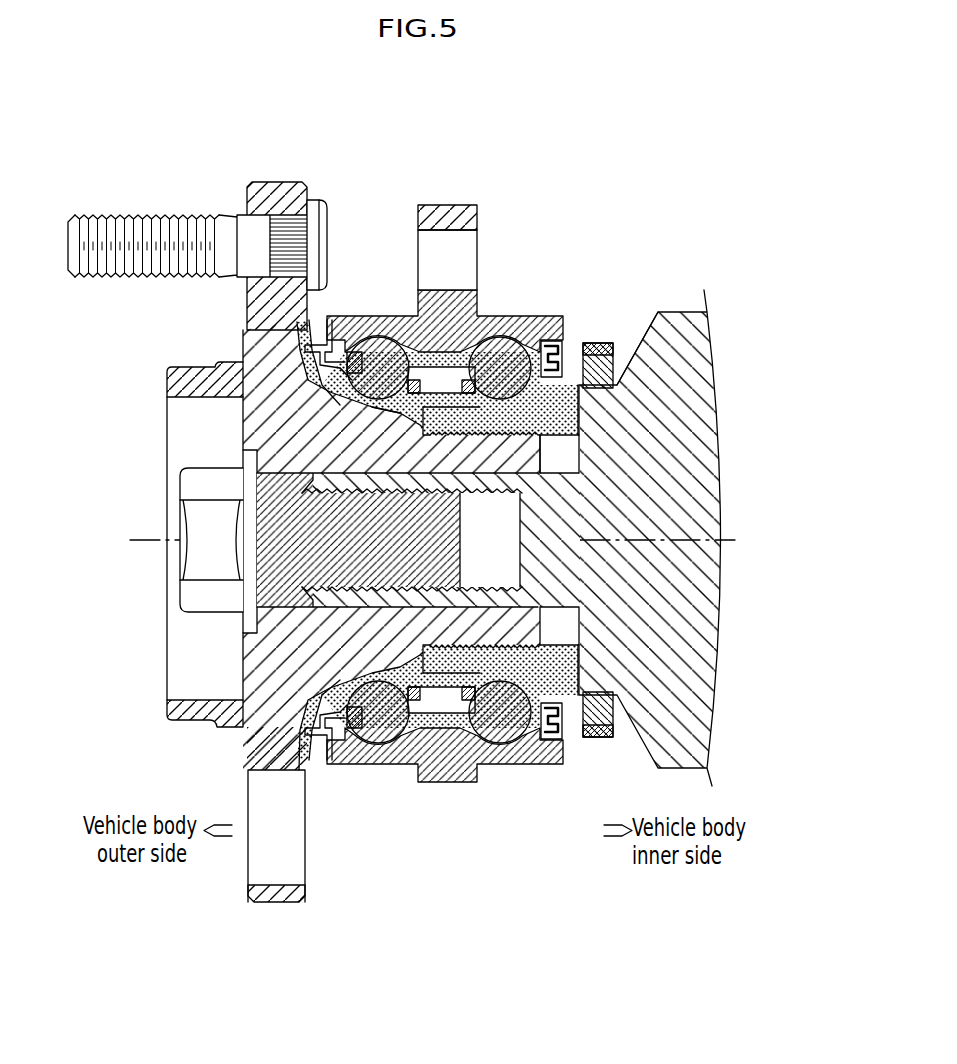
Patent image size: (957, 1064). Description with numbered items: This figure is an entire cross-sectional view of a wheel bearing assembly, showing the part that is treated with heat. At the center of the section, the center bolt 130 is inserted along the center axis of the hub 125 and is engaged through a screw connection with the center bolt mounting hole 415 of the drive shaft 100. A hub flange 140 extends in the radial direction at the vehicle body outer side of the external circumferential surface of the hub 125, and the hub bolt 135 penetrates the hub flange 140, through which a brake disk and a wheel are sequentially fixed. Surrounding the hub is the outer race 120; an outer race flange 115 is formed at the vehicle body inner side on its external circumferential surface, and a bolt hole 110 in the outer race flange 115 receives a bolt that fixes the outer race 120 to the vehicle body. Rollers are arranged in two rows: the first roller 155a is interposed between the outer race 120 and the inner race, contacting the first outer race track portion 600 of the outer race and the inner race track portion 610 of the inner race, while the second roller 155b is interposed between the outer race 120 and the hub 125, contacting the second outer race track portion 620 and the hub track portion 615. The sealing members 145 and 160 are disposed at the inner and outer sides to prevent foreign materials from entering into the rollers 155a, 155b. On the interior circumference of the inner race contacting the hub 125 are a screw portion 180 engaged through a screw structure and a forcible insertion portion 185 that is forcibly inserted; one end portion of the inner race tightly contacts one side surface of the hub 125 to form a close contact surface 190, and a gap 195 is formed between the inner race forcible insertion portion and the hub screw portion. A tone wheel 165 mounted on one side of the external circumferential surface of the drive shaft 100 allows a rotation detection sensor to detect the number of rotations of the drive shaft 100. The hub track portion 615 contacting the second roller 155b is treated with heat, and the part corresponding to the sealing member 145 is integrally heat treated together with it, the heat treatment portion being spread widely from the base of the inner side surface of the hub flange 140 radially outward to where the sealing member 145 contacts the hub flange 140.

The drive shaft 100 is at (647, 602).
The bolt hole 110 is at (463, 247).
The outer race flange 115 is at (442, 212).
The outer race 120 is at (463, 335).
The hub 125 is at (316, 427).
The center bolt 130 is at (388, 574).
The hub bolt 135 is at (255, 245).
The hub flange 140 is at (277, 195).
The sealing member 145 is at (340, 330).
The first roller 155a is at (500, 540).
The second roller 155b is at (378, 540).
The sealing member 160 is at (568, 342).
The tone wheel 165 is at (598, 743).
The screw portion 180 is at (540, 463).
The forcible insertion portion 185 is at (560, 462).
The close contact surface 190 is at (470, 440).
The gap 195 is at (585, 410).
The center bolt mounting hole 415 is at (506, 574).
The first outer race track portion 600 is at (525, 340).
The inner race track portion 610 is at (615, 392).
The hub track portion 615 is at (335, 376).
The second outer race track portion 620 is at (375, 352).